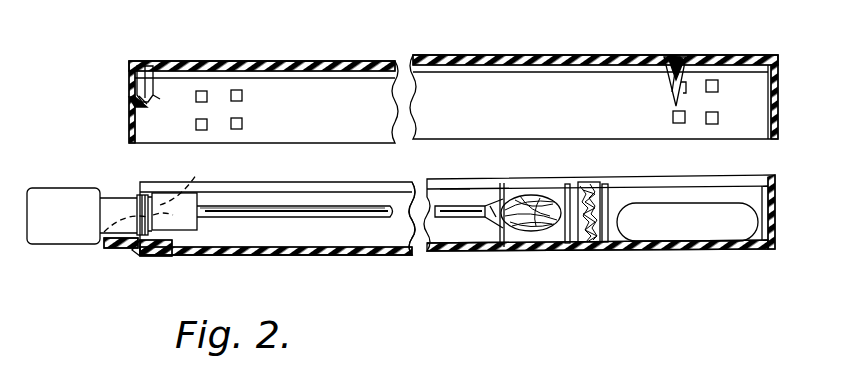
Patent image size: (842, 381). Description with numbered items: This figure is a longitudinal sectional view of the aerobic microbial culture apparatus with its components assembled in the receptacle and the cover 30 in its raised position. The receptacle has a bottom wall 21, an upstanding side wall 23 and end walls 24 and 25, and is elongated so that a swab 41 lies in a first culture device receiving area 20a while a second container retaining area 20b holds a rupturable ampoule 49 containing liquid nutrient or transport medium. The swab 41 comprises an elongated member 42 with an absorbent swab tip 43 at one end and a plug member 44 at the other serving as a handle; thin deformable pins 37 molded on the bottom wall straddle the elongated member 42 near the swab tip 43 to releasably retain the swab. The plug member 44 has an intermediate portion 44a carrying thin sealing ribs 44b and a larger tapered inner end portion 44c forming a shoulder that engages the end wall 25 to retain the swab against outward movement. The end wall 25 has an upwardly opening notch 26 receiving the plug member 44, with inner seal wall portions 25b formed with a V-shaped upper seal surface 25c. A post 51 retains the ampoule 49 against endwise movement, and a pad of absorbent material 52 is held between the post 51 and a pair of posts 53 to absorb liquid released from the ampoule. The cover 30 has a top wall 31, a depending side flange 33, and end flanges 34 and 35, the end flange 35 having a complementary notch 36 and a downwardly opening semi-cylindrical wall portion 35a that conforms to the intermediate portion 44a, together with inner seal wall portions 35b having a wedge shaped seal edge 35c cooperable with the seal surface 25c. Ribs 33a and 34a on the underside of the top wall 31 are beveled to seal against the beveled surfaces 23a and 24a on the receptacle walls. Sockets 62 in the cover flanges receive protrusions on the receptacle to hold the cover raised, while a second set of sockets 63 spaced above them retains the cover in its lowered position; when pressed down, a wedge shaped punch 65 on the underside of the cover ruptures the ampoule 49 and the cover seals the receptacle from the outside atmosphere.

The cover 30 is at (474, 46).
The top wall 31 is at (512, 56).
The side flange 33 is at (343, 90).
The rib 33a is at (303, 72).
The end flange 34 is at (778, 62).
The rib 34a is at (763, 68).
The end flange 35 is at (129, 80).
The semi-cylindrical wall portion 35a is at (149, 102).
The inner seal wall portion 35b is at (160, 97).
The wedge shaped seal edge 35c is at (156, 96).
The notch 36 is at (137, 107).
The socket 62 is at (246, 122).
The socket 63 is at (246, 96).
The wedge shaped punch 65 is at (674, 103).
The culture device receiving area 20a is at (349, 248).
The container retaining area 20b is at (648, 246).
The bottom wall 21 is at (280, 260).
The side wall 23 is at (324, 206).
The beveled surface 23a is at (276, 186).
The end wall 24 is at (772, 226).
The beveled surface 24a is at (764, 178).
The end wall 25 is at (136, 248).
The inner seal wall portion 25b is at (170, 206).
The V-shaped upper seal surface 25c is at (158, 215).
The notch 26 is at (110, 238).
The pins 37 is at (488, 244).
The swab 41 is at (455, 196).
The elongated member 42 is at (394, 189).
The swab tip 43 is at (540, 236).
The plug member 44 is at (88, 192).
The intermediate portion 44a is at (168, 196).
The sealing ribs 44b is at (142, 196).
The inner end portion 44c is at (186, 243).
The rupturable ampoule 49 is at (674, 202).
The post 51 is at (608, 184).
The pad of absorbent material 52 is at (588, 246).
The posts 53 is at (566, 184).